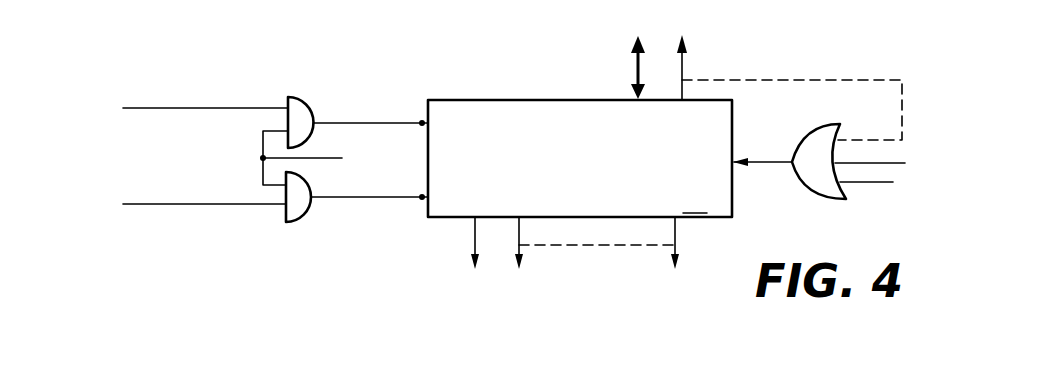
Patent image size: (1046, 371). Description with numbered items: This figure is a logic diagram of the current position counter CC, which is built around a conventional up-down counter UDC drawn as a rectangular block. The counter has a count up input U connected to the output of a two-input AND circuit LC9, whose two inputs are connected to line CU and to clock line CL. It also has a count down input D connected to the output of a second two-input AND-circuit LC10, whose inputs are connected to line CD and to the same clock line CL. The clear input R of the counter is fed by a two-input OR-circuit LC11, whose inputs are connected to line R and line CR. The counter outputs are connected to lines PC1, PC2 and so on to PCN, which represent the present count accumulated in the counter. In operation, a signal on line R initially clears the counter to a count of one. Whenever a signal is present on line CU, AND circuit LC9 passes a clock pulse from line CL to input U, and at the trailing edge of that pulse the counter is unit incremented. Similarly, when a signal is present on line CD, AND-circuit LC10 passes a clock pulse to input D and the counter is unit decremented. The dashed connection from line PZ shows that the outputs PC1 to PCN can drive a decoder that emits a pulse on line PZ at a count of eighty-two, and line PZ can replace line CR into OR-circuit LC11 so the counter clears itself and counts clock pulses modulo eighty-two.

The current position counter CC is at (503, 307).
The line CU is at (178, 107).
The line CD is at (170, 204).
The two-input AND circuit LC9 is at (303, 102).
The two-input AND-circuit LC10 is at (312, 214).
The line CL is at (318, 158).
The up-down counter UDC is at (580, 126).
The count up input U is at (451, 131).
The count down input D is at (452, 196).
The line PZ is at (688, 64).
The line PC1 is at (473, 239).
The line PC2 is at (522, 248).
The line PCN is at (678, 252).
The two-input OR-circuit LC11 is at (817, 195).
The clear input / line R is at (906, 163).
The line CR is at (877, 183).